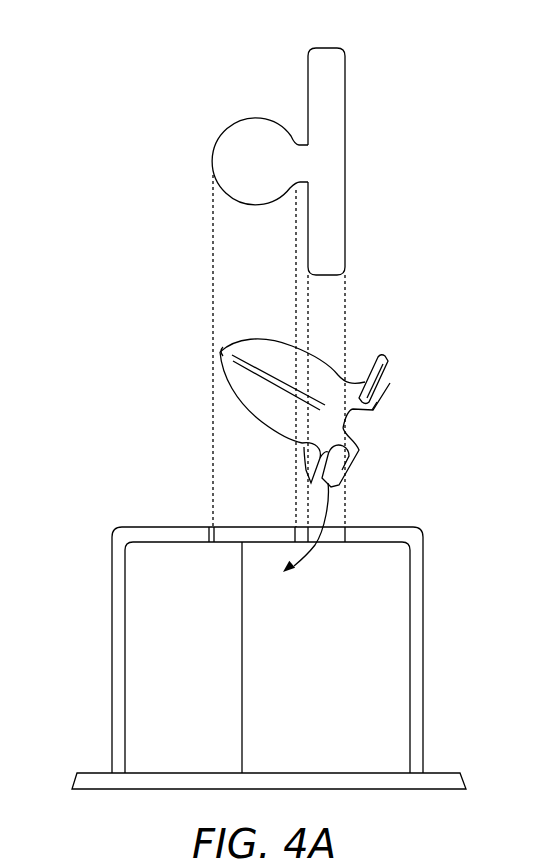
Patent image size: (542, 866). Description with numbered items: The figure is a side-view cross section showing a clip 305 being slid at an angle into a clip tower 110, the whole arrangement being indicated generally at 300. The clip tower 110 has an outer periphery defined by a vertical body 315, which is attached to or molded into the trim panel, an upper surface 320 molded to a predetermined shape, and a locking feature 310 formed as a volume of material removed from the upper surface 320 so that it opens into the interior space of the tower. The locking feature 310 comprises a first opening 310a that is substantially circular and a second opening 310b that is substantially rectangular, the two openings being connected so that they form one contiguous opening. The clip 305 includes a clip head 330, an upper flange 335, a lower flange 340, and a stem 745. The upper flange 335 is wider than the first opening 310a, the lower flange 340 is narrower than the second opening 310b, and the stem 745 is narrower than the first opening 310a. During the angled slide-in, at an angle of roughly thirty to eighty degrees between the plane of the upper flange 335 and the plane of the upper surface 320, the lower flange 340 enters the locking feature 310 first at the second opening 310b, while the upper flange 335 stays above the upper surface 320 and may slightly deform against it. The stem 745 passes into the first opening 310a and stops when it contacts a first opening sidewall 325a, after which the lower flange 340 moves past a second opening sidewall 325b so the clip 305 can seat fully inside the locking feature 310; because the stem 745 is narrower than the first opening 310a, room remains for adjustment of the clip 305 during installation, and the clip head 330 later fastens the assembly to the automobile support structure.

The stand assembly 300 is at (126, 78).
The locking feature 310 is at (196, 172).
The first opening 310a is at (255, 118).
The second opening 310b is at (344, 48).
The clip 305 is at (192, 343).
The clip head 330 is at (322, 357).
The upper flange 335 is at (378, 360).
The stem 745 is at (390, 383).
The lower flange 340 is at (397, 385).
The clip tower 110 is at (120, 464).
The upper surface 320 is at (137, 527).
The first opening sidewall 325a is at (213, 530).
The second opening sidewall 325b is at (345, 532).
The vertical body 315 is at (112, 673).